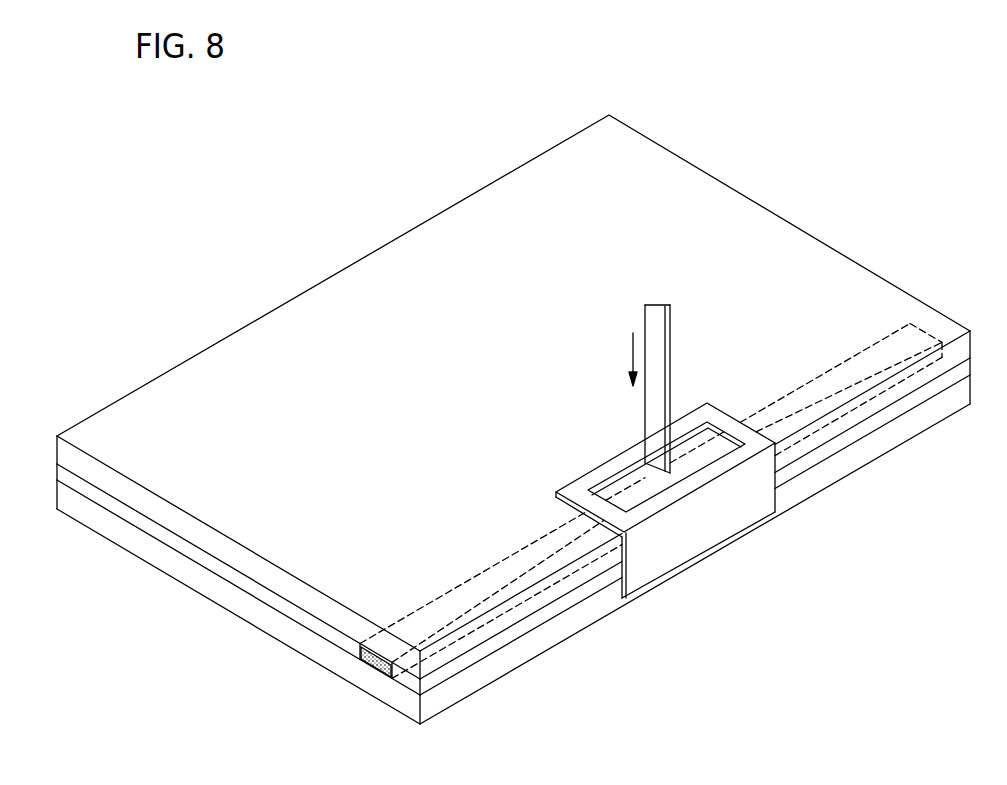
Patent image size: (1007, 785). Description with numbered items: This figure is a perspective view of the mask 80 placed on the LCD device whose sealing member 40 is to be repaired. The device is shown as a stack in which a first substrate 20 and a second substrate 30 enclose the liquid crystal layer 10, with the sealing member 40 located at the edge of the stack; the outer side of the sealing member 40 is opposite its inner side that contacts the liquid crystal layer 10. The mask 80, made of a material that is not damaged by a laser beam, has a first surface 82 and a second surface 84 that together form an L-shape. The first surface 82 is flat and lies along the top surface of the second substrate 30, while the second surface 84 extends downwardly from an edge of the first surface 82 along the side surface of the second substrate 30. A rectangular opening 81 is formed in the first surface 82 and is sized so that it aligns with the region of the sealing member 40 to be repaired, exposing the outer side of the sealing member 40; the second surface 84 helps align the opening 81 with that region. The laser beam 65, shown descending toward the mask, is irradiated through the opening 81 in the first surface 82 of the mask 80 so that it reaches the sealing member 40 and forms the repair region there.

The liquid crystal layer 10 is at (258, 588).
The first substrate 20 is at (282, 627).
The second substrate 30 is at (228, 552).
The sealing member 40 is at (370, 660).
The laser beam 65 is at (657, 342).
The mask 80 is at (665, 511).
The opening 81 is at (636, 489).
The first surface 82 is at (573, 490).
The second surface 84 is at (655, 562).